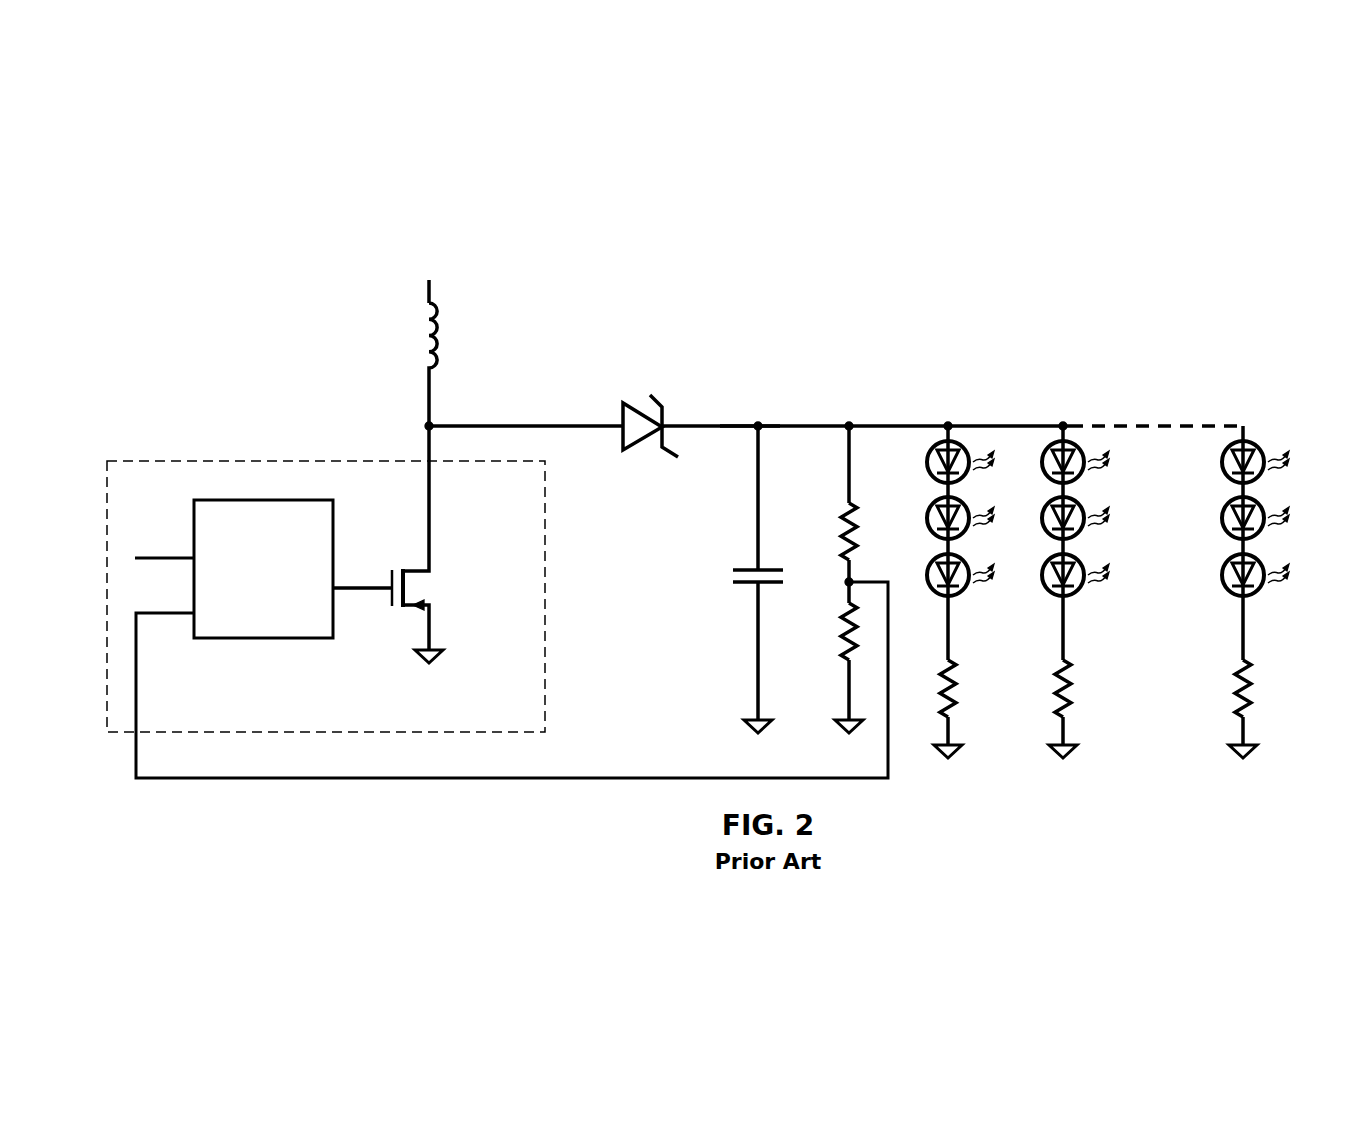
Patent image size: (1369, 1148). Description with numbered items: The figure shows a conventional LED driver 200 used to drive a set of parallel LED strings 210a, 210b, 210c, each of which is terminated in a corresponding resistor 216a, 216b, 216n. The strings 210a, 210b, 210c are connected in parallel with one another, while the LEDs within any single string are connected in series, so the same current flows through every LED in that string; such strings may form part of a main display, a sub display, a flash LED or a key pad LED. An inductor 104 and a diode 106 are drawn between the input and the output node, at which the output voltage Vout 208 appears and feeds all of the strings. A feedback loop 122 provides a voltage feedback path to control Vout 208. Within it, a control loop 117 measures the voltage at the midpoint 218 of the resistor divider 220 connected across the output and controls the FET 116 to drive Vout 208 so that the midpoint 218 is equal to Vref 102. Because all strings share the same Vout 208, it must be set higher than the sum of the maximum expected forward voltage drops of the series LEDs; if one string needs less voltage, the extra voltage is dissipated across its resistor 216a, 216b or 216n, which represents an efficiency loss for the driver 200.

The LED driver 200 is at (192, 222).
The Vref 102 is at (442, 285).
The inductor 104 is at (420, 320).
The diode 106 is at (623, 440).
The Vout 208 is at (765, 380).
The resistor divider 220 is at (818, 520).
The midpoint 218 is at (848, 586).
The control loop 117 is at (272, 498).
The FET 116 is at (423, 590).
The feedback loop 122 is at (192, 460).
The LED string 210a is at (933, 435).
The LED string 210b is at (1118, 435).
The LED string 210c is at (1277, 435).
The resistor 216a is at (988, 698).
The resistor 216b is at (1108, 698).
The resistor 216n is at (1277, 698).